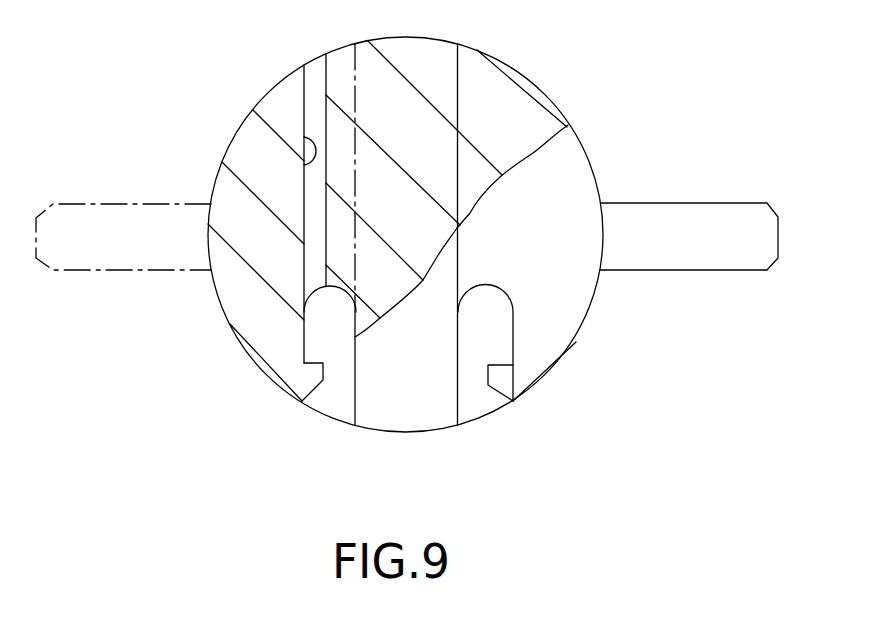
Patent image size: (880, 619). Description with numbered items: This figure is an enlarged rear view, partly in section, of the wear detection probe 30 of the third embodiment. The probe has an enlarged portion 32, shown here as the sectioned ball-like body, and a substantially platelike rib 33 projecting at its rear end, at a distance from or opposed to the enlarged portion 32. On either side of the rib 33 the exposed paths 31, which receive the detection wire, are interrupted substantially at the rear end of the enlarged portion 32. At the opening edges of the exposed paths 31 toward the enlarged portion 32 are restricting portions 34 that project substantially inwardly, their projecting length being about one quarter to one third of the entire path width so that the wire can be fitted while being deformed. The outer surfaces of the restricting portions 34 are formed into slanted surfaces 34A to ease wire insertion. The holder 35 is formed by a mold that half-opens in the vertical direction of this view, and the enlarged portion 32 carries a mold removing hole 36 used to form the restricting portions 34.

The wear detection probe 30 is at (407, 216).
The exposed path 31 is at (306, 311).
The enlarged portion 32 is at (563, 169).
The rib 33 is at (402, 403).
The restricting portion 34 is at (320, 375).
The slanted surface 34A is at (320, 375).
The holder 35 is at (254, 80).
The mold removing hole 36 is at (303, 165).